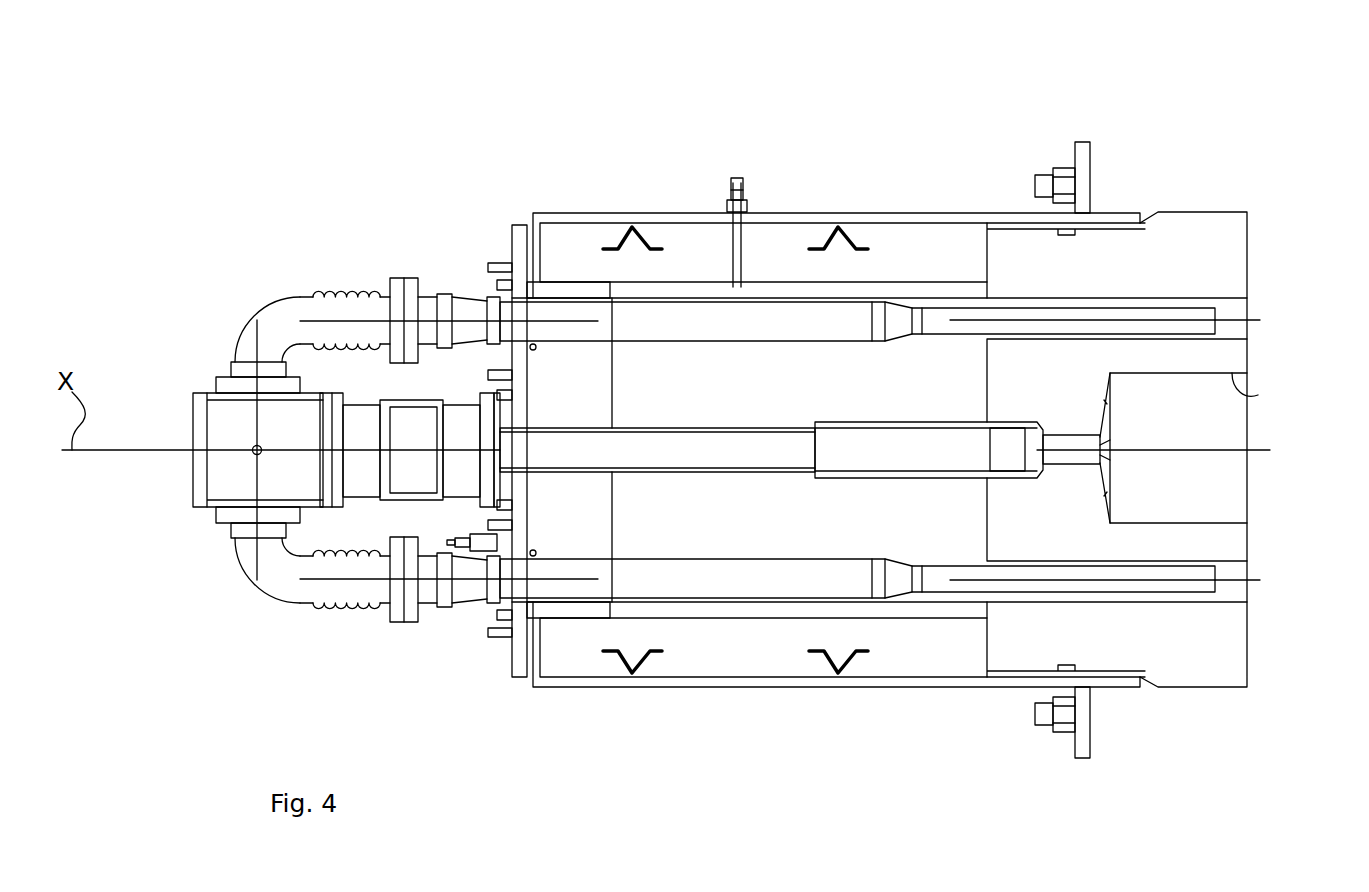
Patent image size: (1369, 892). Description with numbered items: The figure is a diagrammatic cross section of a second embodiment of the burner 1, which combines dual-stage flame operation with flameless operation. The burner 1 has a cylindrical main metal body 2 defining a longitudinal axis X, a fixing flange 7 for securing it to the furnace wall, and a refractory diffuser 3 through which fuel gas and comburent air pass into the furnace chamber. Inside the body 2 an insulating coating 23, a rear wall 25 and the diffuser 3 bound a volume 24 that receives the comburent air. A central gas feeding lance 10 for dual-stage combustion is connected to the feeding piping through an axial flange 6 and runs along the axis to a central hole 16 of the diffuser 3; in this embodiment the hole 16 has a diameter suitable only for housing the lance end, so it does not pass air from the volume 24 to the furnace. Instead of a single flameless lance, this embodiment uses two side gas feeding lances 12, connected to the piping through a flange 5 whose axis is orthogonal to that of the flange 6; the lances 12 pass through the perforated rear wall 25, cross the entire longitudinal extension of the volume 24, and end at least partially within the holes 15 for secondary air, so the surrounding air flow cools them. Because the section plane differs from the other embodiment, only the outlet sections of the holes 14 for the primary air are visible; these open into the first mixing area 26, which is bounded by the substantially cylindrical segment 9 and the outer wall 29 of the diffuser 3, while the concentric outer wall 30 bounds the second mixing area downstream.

The burner 1 is at (848, 114).
The main metal body 2 is at (582, 206).
The refractory diffuser 3 is at (1160, 236).
The flange 5 is at (218, 440).
The axial flange 6 is at (410, 460).
The fixing flange 7 is at (1082, 150).
The substantially cylindrical segment 9 is at (1258, 395).
The gas feeding lance 10 is at (742, 448).
The side gas feeding lance 12 is at (1200, 318).
The holes for primary air 14 is at (1110, 405).
The holes for secondary air 15 is at (1240, 311).
The central hole 16 is at (985, 425).
The insulating coating 23 is at (672, 236).
The volume 24 is at (826, 403).
The rear wall 25 is at (500, 658).
The first mixing area 26 is at (1177, 427).
The outer wall 29 is at (1110, 470).
The outer wall 30 is at (1247, 238).